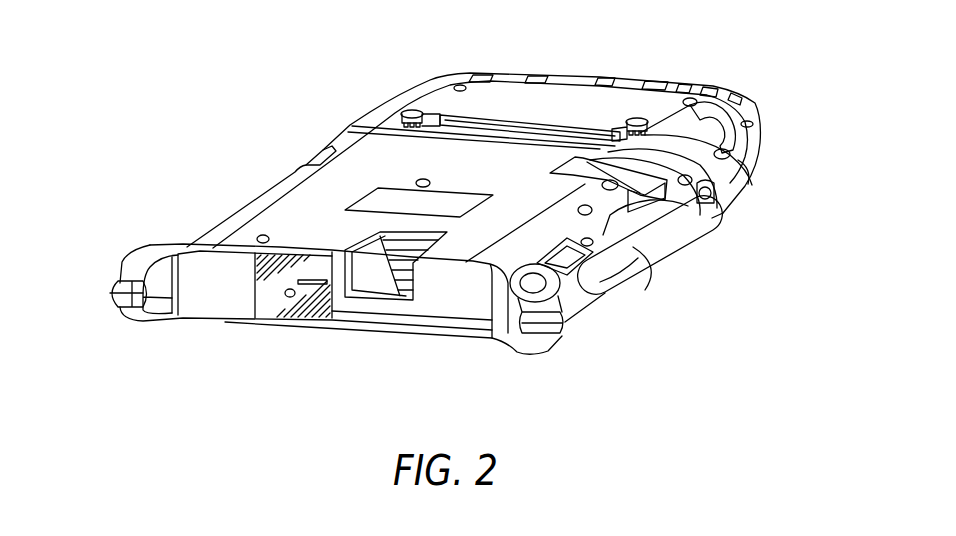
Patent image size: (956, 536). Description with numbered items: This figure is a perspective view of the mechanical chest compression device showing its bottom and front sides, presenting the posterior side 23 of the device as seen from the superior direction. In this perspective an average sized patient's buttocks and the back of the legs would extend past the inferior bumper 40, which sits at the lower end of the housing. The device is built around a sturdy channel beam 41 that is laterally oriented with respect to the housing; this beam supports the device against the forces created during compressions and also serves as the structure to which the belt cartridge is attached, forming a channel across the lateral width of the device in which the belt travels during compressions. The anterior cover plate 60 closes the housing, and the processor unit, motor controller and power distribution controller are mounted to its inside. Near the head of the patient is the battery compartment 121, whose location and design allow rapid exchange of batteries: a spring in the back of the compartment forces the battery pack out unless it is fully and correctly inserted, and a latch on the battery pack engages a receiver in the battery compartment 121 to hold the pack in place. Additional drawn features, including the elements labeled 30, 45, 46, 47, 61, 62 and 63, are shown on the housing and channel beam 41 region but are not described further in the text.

The posterior side 23 is at (327, 153).
The post 30 is at (713, 190).
The inferior bumper 40 is at (120, 298).
The channel beam 41 is at (568, 128).
The fastener 45 is at (420, 118).
The post 46 is at (390, 122).
The post 47 is at (628, 126).
The anterior cover plate 60 is at (440, 232).
The first region 61 is at (428, 172).
The second region 62 is at (524, 113).
The hole 63 is at (459, 85).
The battery compartment 121 is at (308, 268).